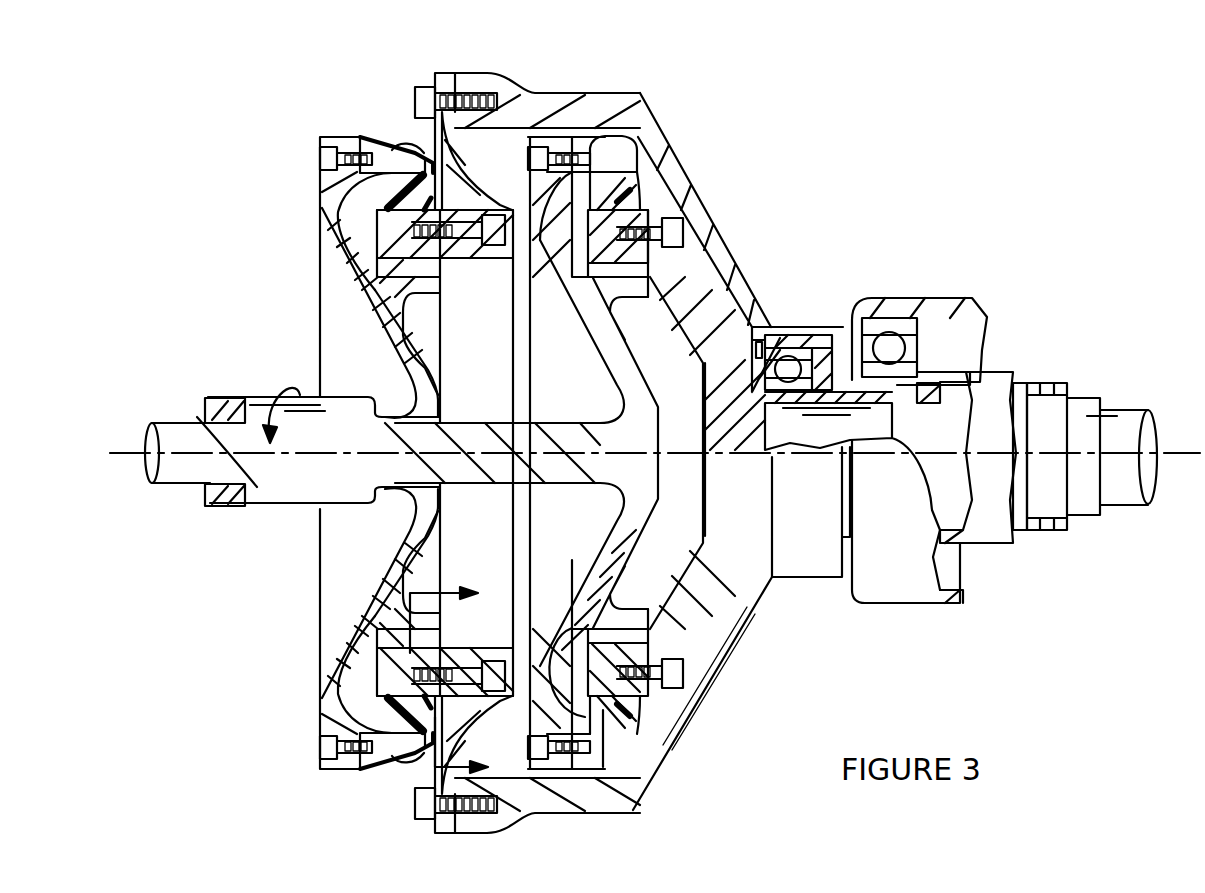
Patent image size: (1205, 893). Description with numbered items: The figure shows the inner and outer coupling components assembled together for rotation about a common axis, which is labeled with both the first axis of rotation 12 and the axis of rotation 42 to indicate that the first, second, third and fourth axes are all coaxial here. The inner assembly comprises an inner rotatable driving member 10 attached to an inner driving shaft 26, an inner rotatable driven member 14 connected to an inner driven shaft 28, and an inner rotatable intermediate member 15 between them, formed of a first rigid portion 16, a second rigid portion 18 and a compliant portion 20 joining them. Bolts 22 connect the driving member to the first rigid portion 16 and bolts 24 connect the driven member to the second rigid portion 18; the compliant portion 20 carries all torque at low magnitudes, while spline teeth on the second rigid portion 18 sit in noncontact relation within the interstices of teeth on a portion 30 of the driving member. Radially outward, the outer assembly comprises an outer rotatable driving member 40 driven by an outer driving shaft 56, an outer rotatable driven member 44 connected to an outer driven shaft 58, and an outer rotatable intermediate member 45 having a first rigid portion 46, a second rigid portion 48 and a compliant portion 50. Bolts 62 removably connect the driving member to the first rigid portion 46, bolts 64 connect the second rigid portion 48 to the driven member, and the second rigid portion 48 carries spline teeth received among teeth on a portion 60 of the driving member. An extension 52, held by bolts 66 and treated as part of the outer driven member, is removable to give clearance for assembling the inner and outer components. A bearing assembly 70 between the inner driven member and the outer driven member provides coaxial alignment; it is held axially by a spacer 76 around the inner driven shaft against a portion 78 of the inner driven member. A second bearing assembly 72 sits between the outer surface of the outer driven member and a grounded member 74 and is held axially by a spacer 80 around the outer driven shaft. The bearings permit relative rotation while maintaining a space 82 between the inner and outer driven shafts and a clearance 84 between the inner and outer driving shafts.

The inner rotatable driving member 10 is at (613, 358).
The first axis of rotation 12 is at (1177, 462).
The inner rotatable driven member 14 is at (757, 320).
The inner rotatable intermediate member 15 is at (638, 137).
The first rigid portion 16 is at (608, 158).
The second rigid portion 18 is at (627, 653).
The compliant portion 20 is at (603, 707).
The bolts 22 is at (545, 772).
The bolts 24 is at (693, 215).
The inner driving shaft 26 is at (172, 473).
The inner driven shaft 28 is at (1123, 422).
The portion of the inner rotatable driving member 30 is at (630, 617).
The outer rotatable driving member 40 is at (387, 323).
The axis of rotation 42 is at (626, 463).
The outer rotatable driven member 44 is at (723, 252).
The outer rotatable intermediate member 45 is at (393, 767).
The first rigid portion 46 is at (363, 767).
The second rigid portion 48 is at (385, 632).
The compliant portion 50 is at (327, 715).
The extension 52 is at (497, 820).
The outer driving shaft 56 is at (278, 485).
The outer driven shaft 58 is at (1022, 397).
The portion of the outer rotatable driving member 60 is at (412, 622).
The bolts 62 is at (325, 747).
The bolts 64 is at (503, 663).
The bolts 66 is at (410, 805).
The bearing assembly 70 is at (802, 353).
The bearing assembly 72 is at (888, 323).
The grounded member 74 is at (898, 590).
The spacer 76 is at (748, 410).
The portion of the inner rotatable driven member 78 is at (740, 396).
The spacer 80 is at (988, 388).
The space 82 is at (1055, 388).
The clearance 84 is at (200, 487).